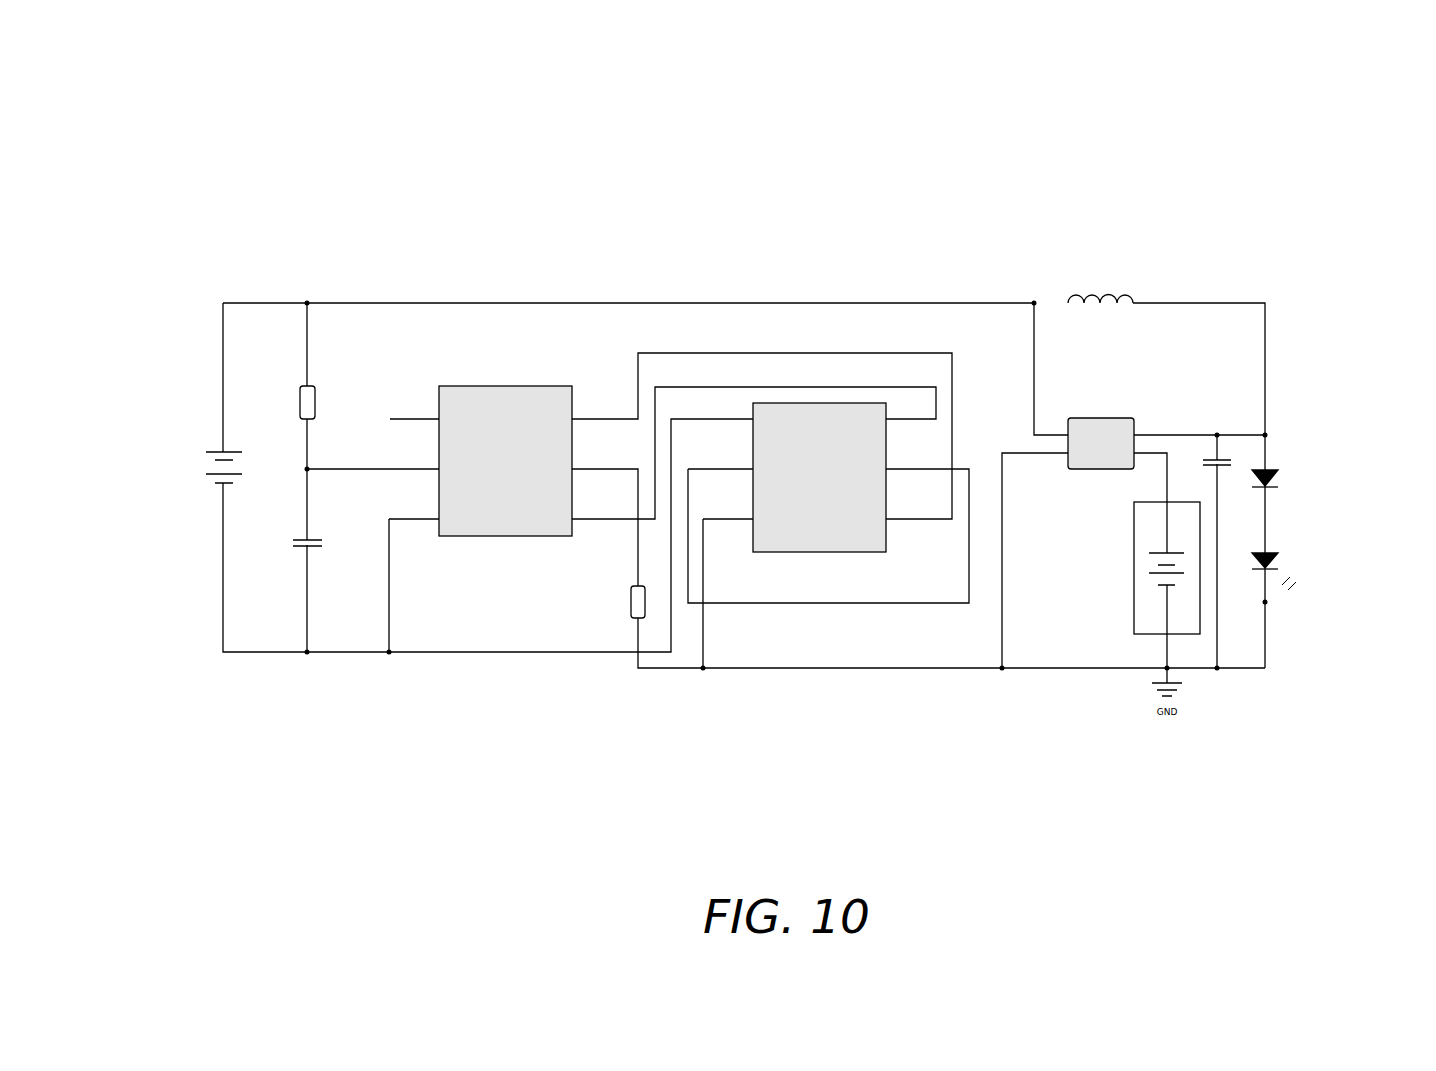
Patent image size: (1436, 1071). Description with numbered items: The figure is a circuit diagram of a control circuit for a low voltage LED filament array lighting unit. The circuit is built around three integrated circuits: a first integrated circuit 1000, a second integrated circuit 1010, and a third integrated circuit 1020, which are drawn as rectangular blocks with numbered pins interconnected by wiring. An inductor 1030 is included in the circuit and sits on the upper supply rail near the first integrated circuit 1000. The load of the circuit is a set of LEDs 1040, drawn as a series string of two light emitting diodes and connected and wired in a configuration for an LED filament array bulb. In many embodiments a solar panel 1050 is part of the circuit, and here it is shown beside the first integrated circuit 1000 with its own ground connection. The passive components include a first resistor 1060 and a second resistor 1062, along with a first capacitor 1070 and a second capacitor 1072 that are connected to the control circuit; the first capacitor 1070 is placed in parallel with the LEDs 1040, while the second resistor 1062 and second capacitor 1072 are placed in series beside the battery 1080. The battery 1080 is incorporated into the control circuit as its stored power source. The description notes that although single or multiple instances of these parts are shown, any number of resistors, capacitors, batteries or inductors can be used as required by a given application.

The first integrated circuit 1000 is at (1104, 423).
The second integrated circuit 1010 is at (820, 422).
The third integrated circuit 1020 is at (550, 423).
The inductor 1030 is at (1102, 290).
The LEDs 1040 is at (1288, 557).
The solar panel 1050 is at (1161, 613).
The first resistor 1060 is at (632, 615).
The second resistor 1062 is at (309, 400).
The first capacitor 1070 is at (1215, 466).
The second capacitor 1072 is at (316, 552).
The battery 1080 is at (216, 480).